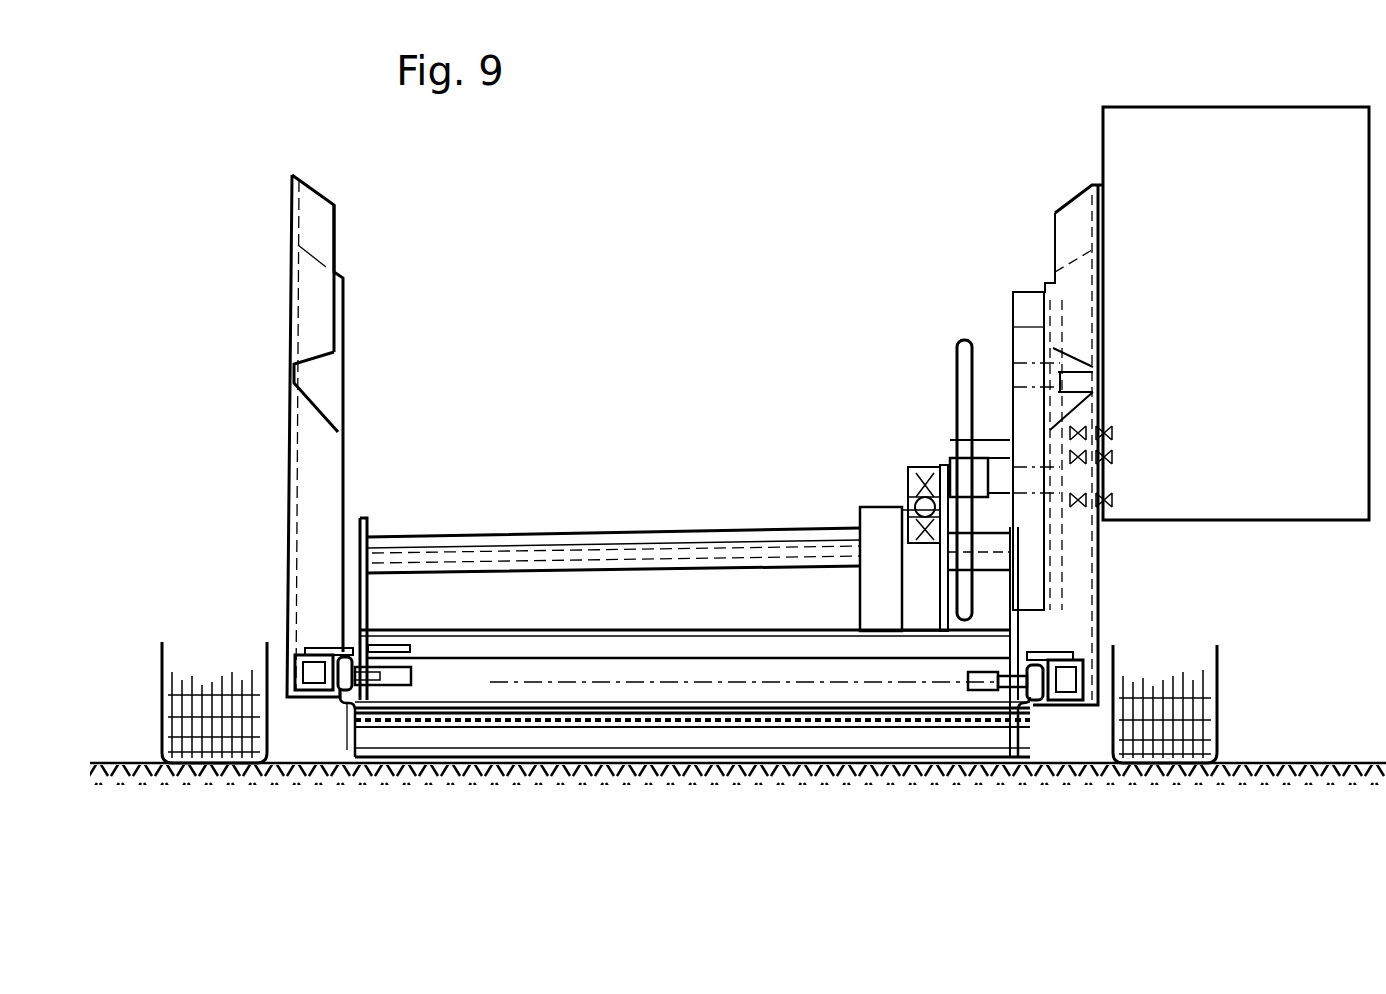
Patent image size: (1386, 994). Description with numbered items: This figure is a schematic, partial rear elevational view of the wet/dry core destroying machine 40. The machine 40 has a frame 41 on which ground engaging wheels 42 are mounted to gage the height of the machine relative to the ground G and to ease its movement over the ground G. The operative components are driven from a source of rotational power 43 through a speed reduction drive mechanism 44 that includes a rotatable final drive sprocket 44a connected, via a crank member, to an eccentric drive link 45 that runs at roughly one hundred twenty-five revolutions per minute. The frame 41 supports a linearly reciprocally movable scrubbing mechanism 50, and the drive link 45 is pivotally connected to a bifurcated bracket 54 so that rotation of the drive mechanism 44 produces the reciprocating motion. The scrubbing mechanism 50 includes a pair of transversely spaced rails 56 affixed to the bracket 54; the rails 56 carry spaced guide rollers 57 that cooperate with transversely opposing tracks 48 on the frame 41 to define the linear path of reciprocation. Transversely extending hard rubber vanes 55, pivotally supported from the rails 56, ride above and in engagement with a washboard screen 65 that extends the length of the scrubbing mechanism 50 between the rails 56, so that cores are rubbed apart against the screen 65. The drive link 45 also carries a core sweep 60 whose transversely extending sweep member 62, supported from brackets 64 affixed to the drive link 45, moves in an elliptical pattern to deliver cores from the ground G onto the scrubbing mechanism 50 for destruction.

The core destroying machine 40 is at (806, 168).
The frame 41 is at (1100, 548).
The ground engaging wheels 42 is at (160, 690).
The source of rotational power 43 is at (1183, 105).
The speed reduction drive mechanism 44 is at (978, 262).
The final drive sprocket 44a is at (957, 365).
The eccentric drive link 45 is at (932, 465).
The tracks 48 is at (318, 648).
The scrubbing mechanism 50 is at (537, 452).
The bifurcated bracket 54 is at (372, 583).
The vanes 55 is at (660, 660).
The rails 56 is at (398, 651).
The guide rollers 57 is at (347, 678).
The core sweep 60 is at (790, 480).
The sweep member 62 is at (563, 628).
The brackets 64 is at (866, 508).
The screen 65 is at (515, 725).
The ground G is at (1072, 735).